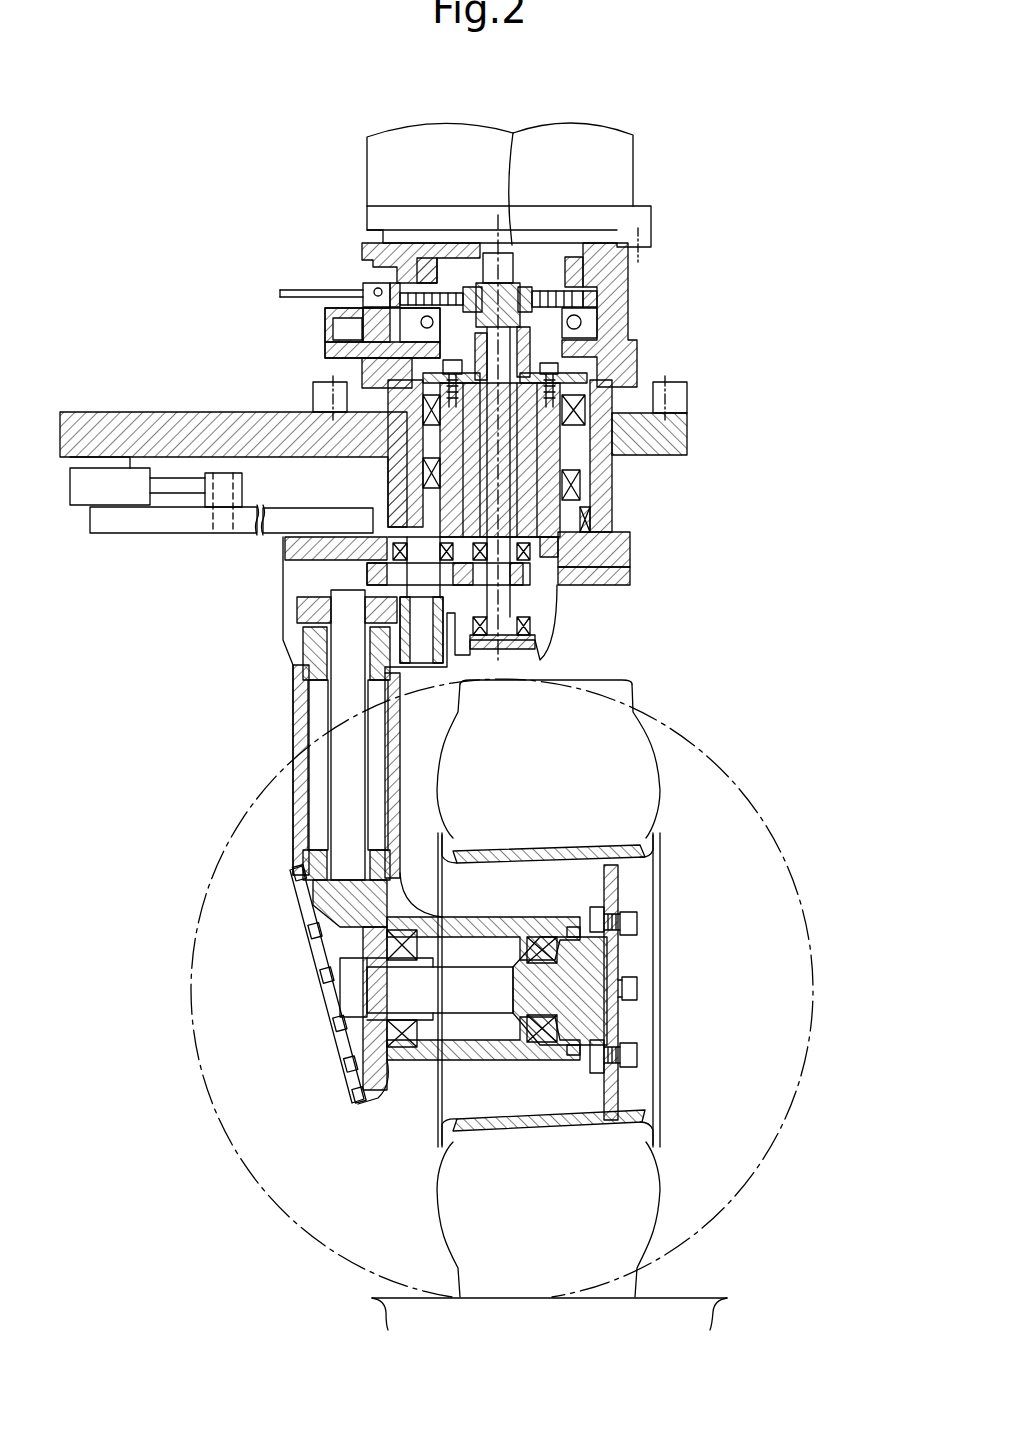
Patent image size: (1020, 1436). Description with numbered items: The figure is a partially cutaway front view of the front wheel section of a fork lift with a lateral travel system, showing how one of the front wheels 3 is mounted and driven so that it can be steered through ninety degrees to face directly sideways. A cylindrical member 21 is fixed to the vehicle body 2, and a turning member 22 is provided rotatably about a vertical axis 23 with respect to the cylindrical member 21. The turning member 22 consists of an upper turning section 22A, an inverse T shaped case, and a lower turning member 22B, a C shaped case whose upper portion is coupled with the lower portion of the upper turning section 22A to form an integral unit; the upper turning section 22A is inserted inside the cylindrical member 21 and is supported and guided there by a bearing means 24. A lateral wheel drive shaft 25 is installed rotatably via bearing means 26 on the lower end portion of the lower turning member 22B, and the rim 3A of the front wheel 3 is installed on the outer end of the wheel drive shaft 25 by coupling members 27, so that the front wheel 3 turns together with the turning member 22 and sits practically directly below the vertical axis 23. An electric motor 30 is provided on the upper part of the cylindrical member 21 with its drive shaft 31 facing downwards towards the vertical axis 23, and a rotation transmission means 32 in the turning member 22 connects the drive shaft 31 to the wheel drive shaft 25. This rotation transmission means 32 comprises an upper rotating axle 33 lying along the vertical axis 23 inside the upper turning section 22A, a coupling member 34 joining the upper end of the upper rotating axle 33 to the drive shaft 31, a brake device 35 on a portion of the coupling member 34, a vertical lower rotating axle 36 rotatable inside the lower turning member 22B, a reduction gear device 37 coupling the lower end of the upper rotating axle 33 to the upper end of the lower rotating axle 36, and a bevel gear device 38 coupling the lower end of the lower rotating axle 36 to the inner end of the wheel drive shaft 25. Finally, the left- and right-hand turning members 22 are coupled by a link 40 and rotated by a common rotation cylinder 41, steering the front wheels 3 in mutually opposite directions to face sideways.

The vehicle body 2 is at (165, 412).
The front wheels 3 is at (640, 1240).
The rims 3A is at (620, 880).
The cylindrical member 21 is at (612, 482).
The turning members 22 is at (669, 581).
The upper turning section 22A is at (618, 552).
The lower turning member 22B is at (613, 585).
The vertical axis 23 is at (503, 447).
The bearing means 24 is at (612, 503).
The wheel drive shaft 25 is at (600, 955).
The bearing means 26 is at (536, 1052).
The coupling members 27 is at (635, 1053).
The electric motor 30 is at (400, 143).
The drive shaft 31 is at (507, 258).
The rotation transmission means 32 is at (314, 578).
The upper rotating axle 33 is at (600, 350).
The coupling member 34 is at (527, 323).
The brake device 35 is at (455, 282).
The lower rotating axle 36 is at (340, 785).
The reduction gear device 37 is at (457, 593).
The bevel gear device 38 is at (335, 945).
The link 40 is at (152, 515).
The rotation cylinder 41 is at (78, 505).